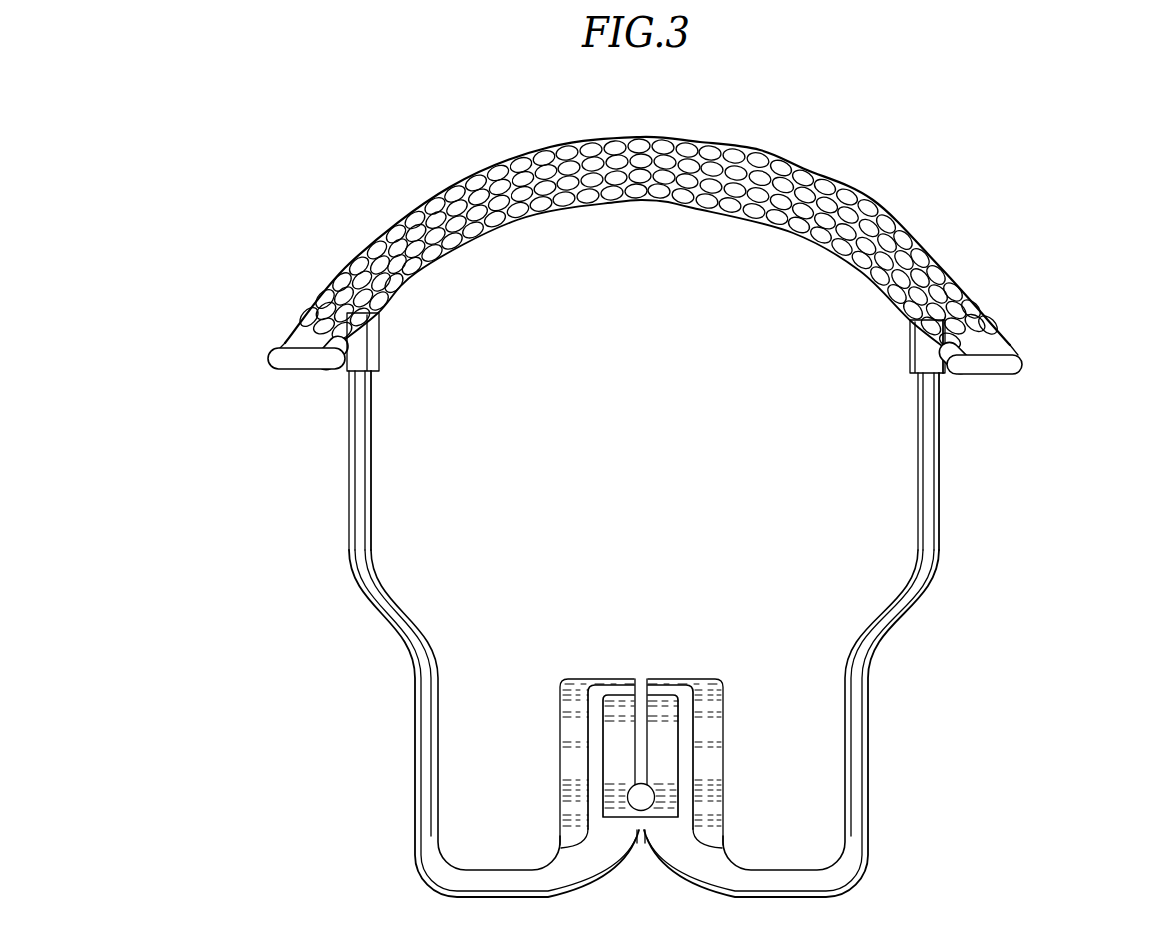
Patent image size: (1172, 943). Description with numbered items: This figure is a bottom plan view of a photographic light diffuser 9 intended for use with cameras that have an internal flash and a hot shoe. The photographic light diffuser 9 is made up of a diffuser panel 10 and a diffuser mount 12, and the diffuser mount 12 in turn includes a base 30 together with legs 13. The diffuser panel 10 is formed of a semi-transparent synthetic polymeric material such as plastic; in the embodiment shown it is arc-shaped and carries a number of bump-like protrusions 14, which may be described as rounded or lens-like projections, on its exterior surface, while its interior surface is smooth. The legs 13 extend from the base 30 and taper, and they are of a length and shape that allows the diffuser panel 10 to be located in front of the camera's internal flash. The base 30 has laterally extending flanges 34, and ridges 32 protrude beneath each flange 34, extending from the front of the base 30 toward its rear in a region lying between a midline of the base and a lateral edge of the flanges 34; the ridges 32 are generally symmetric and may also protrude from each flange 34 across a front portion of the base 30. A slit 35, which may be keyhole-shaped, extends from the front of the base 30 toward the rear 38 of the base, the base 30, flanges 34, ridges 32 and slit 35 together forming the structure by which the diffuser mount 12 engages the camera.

The photographic light diffuser 9 is at (262, 543).
The diffuser panel 10 is at (1034, 380).
The diffuser mount 12 is at (934, 631).
The legs 13 is at (350, 460).
The bump-like protrusions 14 is at (943, 265).
The base 30 is at (666, 705).
The ridges 32 is at (686, 704).
The flanges 34 is at (705, 762).
The slit 35 is at (641, 679).
The rear of the base 38 is at (655, 796).